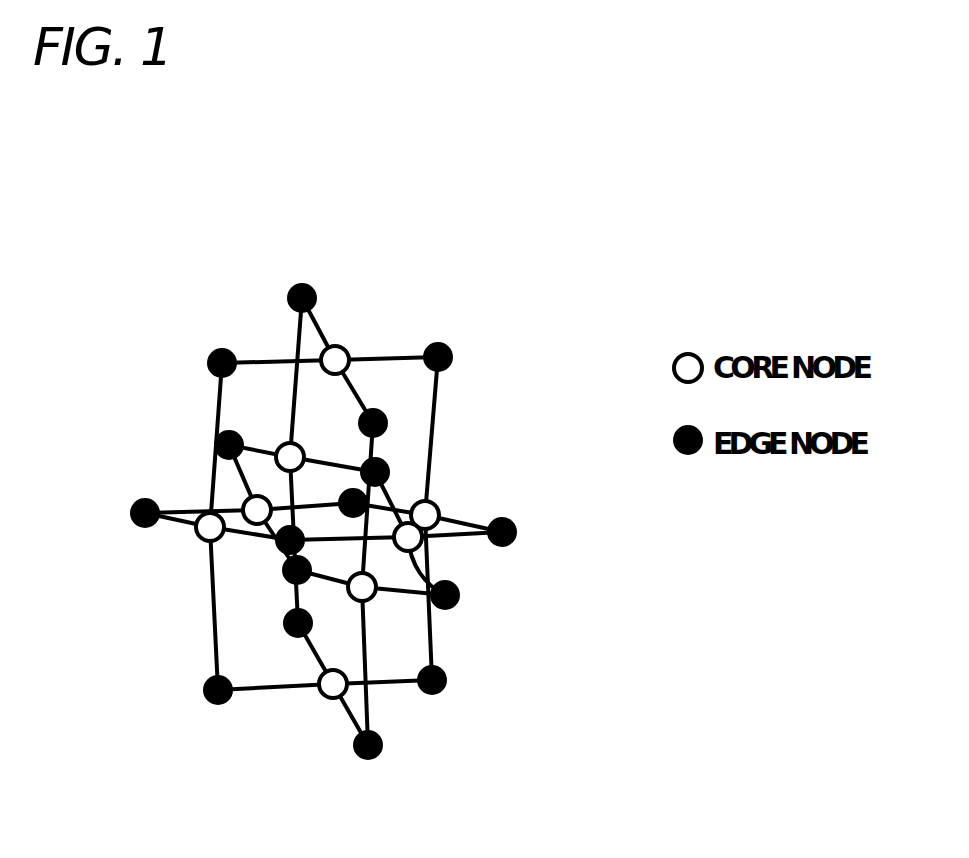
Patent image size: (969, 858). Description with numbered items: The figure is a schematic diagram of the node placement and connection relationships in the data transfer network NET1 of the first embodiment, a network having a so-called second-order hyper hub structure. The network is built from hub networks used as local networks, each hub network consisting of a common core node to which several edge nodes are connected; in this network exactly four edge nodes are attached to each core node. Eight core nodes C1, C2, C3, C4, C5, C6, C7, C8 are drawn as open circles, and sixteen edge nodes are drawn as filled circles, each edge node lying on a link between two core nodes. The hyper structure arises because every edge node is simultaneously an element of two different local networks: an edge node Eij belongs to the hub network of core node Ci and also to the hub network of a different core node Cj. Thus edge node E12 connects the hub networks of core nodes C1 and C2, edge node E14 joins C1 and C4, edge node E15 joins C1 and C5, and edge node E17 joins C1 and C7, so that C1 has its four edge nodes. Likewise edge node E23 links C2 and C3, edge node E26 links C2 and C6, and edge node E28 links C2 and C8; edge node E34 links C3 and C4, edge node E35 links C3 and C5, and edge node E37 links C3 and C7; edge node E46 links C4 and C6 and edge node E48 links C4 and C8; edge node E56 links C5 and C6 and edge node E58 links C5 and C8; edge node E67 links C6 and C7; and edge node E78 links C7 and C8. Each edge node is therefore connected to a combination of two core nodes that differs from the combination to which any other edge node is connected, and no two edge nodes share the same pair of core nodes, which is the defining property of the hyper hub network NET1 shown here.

The data transfer network NET1 is at (454, 172).
The core node C1 is at (350, 344).
The core node C2 is at (278, 445).
The core node C3 is at (245, 500).
The core node C4 is at (200, 540).
The core node C5 is at (440, 510).
The core node C6 is at (410, 552).
The core node C7 is at (368, 601).
The core node C8 is at (320, 705).
The edge node E12 is at (302, 284).
The edge node E14 is at (215, 350).
The edge node E15 is at (455, 352).
The edge node E17 is at (390, 423).
The edge node E23 is at (215, 440).
The edge node E26 is at (392, 470).
The edge node E35 is at (370, 500).
The edge node E34 is at (128, 512).
The edge node E46 is at (275, 543).
The edge node E37 is at (280, 575).
The edge node E28 is at (282, 627).
The edge node E48 is at (205, 700).
The edge node E56 is at (518, 532).
The edge node E67 is at (460, 605).
The edge node E58 is at (437, 695).
The edge node E78 is at (368, 762).